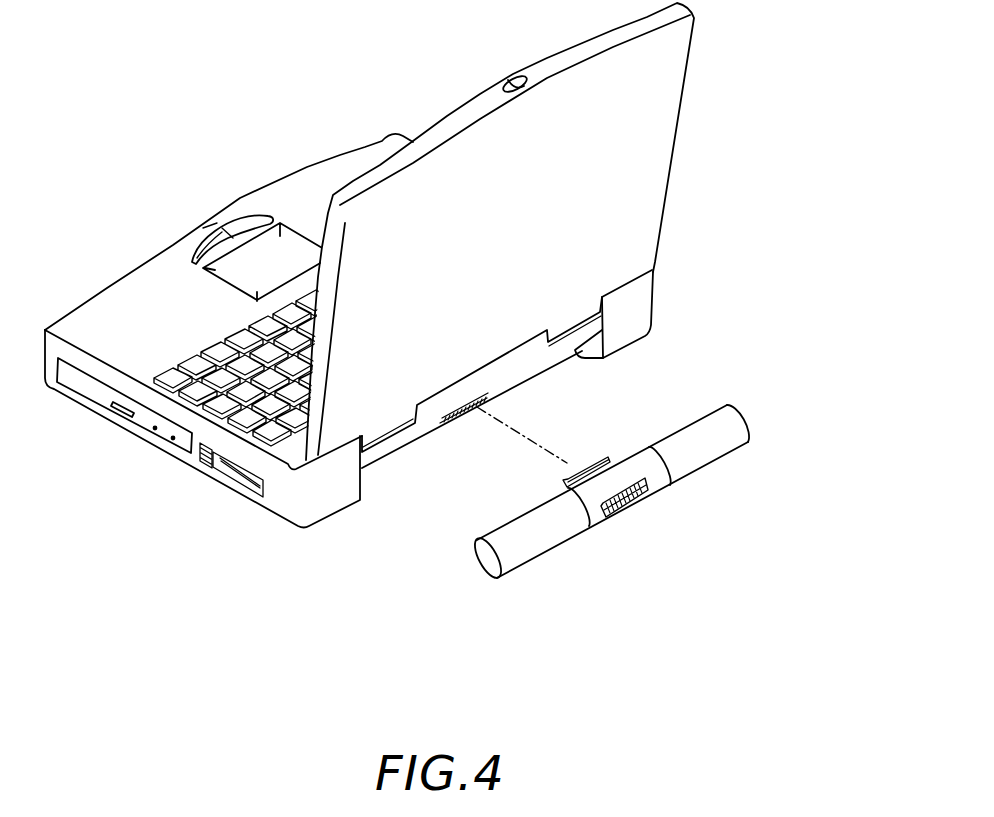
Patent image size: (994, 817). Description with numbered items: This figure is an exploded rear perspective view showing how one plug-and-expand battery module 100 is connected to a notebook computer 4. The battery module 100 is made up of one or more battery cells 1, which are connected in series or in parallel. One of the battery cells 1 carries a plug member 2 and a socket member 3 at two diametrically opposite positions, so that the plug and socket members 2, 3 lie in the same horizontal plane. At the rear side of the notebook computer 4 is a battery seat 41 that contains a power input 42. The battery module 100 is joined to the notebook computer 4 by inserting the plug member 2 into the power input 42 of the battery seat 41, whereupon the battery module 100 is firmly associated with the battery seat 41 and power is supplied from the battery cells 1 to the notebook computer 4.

The plug-and-expand battery module 100 is at (676, 460).
The battery cell 1 is at (592, 515).
The plug member 2 is at (607, 458).
The socket member 3 is at (642, 497).
The notebook computer 4 is at (653, 147).
The battery seat 41 is at (380, 498).
The power input 42 is at (450, 421).